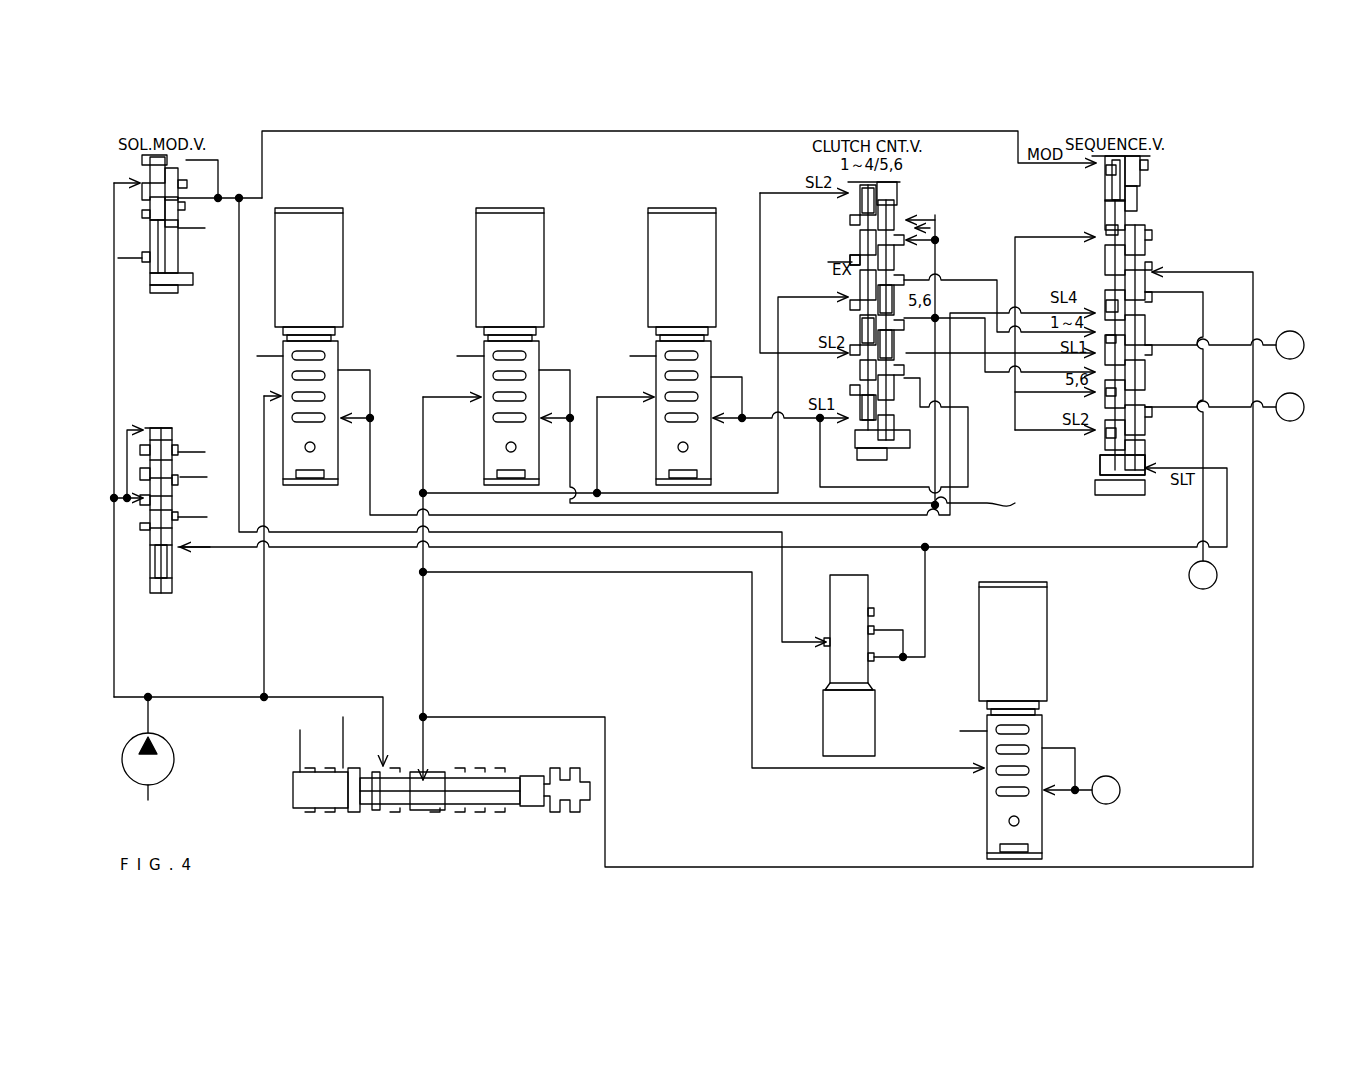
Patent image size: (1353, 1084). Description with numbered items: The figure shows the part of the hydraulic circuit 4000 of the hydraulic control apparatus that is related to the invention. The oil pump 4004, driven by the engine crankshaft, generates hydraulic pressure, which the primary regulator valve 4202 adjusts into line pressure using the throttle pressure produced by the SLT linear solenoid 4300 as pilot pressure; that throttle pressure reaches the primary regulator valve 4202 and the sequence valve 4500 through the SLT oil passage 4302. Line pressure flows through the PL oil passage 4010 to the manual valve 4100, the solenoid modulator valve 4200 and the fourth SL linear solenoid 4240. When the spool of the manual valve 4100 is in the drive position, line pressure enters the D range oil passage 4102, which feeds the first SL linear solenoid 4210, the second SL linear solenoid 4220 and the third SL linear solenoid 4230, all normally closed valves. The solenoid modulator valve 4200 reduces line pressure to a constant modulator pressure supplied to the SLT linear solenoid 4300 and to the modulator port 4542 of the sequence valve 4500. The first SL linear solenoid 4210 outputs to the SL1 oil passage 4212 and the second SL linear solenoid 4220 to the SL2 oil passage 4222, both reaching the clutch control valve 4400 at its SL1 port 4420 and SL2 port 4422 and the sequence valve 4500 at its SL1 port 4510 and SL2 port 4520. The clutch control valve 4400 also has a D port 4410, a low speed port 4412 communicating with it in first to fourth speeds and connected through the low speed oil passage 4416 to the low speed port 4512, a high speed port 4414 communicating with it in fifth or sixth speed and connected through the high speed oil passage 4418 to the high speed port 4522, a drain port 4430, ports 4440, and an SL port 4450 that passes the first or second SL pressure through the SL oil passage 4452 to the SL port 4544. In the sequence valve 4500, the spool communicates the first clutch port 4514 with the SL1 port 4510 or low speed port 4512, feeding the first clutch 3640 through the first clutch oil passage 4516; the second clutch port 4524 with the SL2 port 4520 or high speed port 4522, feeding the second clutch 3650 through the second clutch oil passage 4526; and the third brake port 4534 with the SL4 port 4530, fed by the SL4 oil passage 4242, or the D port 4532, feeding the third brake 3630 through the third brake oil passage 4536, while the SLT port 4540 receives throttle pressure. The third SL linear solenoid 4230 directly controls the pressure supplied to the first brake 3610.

The hydraulic circuit 4000 is at (568, 118).
The oil pump 4004 is at (192, 732).
The PL oil passage 4010 is at (168, 697).
The manual valve 4100 is at (472, 815).
The D range oil passage 4102 is at (783, 293).
The solenoid modulator valve 4200 is at (155, 298).
The primary regulator valve 4202 is at (155, 594).
The first SL linear solenoid 4210 is at (648, 245).
The SL1 oil passage 4212 is at (760, 422).
The second SL linear solenoid 4220 is at (476, 245).
The SL2 oil passage 4222 is at (590, 400).
The third SL linear solenoid 4230 is at (1049, 657).
The fourth SL linear solenoid 4240 is at (345, 285).
The SL4 oil passage 4242 is at (390, 400).
The SLT linear solenoid 4300 is at (880, 675).
The SLT oil passage 4302 is at (1135, 549).
The clutch control valve 4400 is at (908, 180).
The D port (C) 4410 is at (850, 310).
The low speed port (C) 4412 is at (945, 232).
The high speed port (C) 4414 is at (908, 322).
The low speed oil passage 4416 is at (908, 270).
The high speed oil passage 4418 is at (975, 332).
The SL1 port (C) 4420 is at (852, 405).
The SL2 port (C) 4422 is at (850, 203).
The drain port 4430 is at (848, 255).
The ports 4440 is at (935, 213).
The SL port (C) 4450 is at (905, 390).
The SL oil passage 4452 is at (1050, 224).
The sequence valve 4500 is at (1153, 198).
The SL1 port (S) 4510 is at (1130, 368).
The low speed port (S) 4512 is at (1094, 340).
The C1 port 4514 is at (1185, 375).
The C1 oil passage 4516 is at (1232, 348).
The SL2 port (S) 4520 is at (1094, 435).
The high speed port (S) 4522 is at (1092, 392).
The C2 port 4524 is at (1155, 415).
The C2 oil passage 4526 is at (1228, 410).
The SL4 port 4530 is at (1094, 302).
The D port (S) 4532 is at (1153, 265).
The B3 port 4534 is at (1155, 300).
The B3 oil passage 4536 is at (1205, 340).
The SLT port 4540 is at (1150, 478).
The modulator port 4542 is at (1094, 170).
The SL port (S) 4544 is at (1097, 225).
The B1 brake 3610 is at (1115, 778).
The B3 brake 3630 is at (1203, 589).
The C1 clutch 3640 is at (1290, 331).
The C2 clutch 3650 is at (1290, 421).